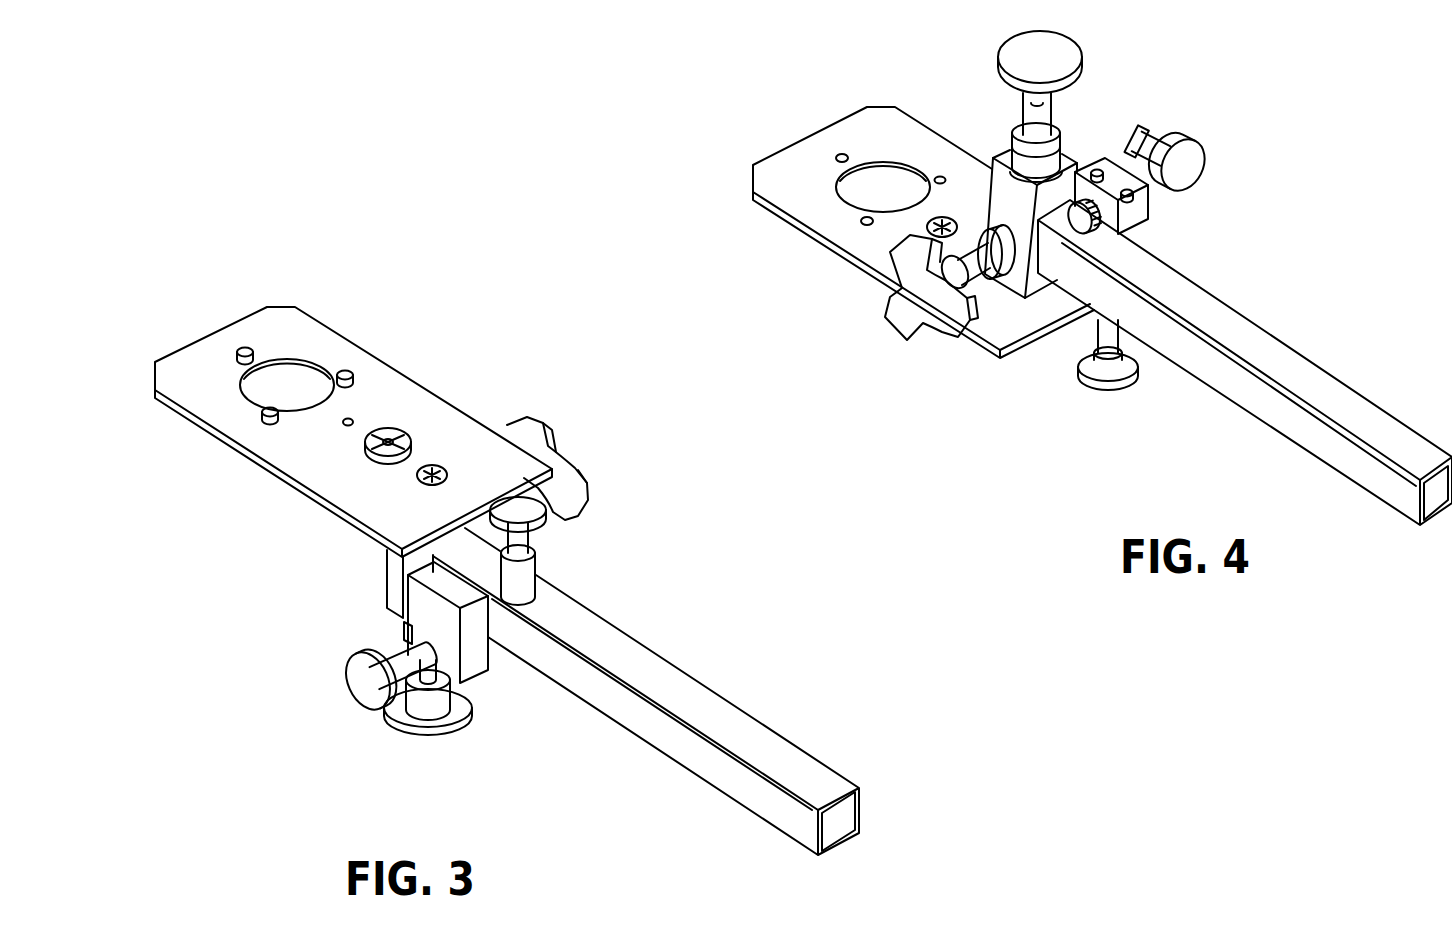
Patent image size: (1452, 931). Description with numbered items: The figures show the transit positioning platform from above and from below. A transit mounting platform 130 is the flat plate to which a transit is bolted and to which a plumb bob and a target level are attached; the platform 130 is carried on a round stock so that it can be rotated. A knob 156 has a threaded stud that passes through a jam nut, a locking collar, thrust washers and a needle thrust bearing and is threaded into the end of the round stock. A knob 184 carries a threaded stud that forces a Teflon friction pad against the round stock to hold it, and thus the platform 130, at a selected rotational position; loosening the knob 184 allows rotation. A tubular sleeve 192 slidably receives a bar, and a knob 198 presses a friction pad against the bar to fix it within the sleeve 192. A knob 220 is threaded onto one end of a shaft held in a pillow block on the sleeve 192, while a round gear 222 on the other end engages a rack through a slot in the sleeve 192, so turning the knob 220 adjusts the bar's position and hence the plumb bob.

In FIG. 3, the transit mounting platform 130 is at (393, 380).
In FIG. 4, the transit mounting platform 130 is at (835, 222).
In FIG. 3, the knob 156 is at (453, 728).
In FIG. 4, the knob 156 is at (1067, 53).
In FIG. 3, the knob 184 is at (576, 484).
In FIG. 4, the knob 184 is at (898, 322).
In FIG. 3, the tubular sleeve 192 is at (665, 675).
In FIG. 4, the tubular sleeve 192 is at (1323, 380).
In FIG. 3, the knob 198 is at (528, 515).
In FIG. 4, the knob 198 is at (1110, 383).
In FIG. 3, the knob 220 is at (358, 683).
In FIG. 4, the knob 220 is at (1203, 165).
In FIG. 4, the round gear 222 is at (1096, 219).